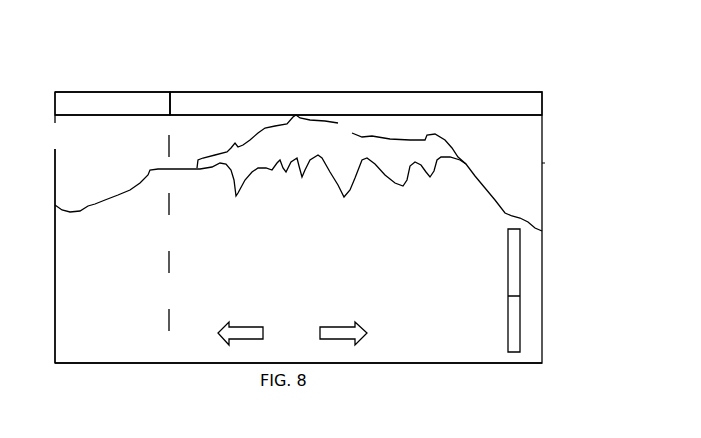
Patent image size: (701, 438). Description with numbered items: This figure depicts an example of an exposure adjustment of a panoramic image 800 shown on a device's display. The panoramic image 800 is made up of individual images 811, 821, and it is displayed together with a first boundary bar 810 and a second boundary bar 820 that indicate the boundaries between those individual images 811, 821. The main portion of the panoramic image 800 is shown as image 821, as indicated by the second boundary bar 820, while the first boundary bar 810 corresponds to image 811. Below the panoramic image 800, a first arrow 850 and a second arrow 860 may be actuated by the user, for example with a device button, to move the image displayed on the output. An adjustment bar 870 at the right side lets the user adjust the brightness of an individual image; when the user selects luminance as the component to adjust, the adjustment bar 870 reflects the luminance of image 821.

The panoramic image 800 is at (281, 44).
The first boundary bar 810 is at (107, 92).
The second boundary bar 820 is at (343, 92).
The individual image 811 is at (70, 351).
The individual image 821 is at (412, 355).
The first arrow 850 is at (240, 332).
The second arrow 860 is at (343, 332).
The adjustment bar 870 is at (518, 296).